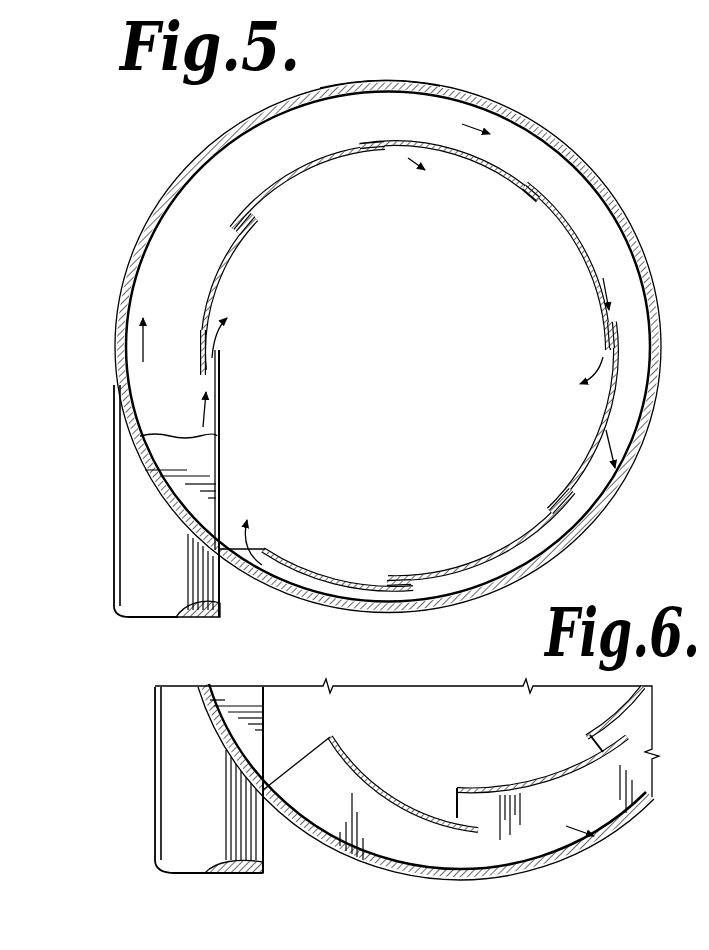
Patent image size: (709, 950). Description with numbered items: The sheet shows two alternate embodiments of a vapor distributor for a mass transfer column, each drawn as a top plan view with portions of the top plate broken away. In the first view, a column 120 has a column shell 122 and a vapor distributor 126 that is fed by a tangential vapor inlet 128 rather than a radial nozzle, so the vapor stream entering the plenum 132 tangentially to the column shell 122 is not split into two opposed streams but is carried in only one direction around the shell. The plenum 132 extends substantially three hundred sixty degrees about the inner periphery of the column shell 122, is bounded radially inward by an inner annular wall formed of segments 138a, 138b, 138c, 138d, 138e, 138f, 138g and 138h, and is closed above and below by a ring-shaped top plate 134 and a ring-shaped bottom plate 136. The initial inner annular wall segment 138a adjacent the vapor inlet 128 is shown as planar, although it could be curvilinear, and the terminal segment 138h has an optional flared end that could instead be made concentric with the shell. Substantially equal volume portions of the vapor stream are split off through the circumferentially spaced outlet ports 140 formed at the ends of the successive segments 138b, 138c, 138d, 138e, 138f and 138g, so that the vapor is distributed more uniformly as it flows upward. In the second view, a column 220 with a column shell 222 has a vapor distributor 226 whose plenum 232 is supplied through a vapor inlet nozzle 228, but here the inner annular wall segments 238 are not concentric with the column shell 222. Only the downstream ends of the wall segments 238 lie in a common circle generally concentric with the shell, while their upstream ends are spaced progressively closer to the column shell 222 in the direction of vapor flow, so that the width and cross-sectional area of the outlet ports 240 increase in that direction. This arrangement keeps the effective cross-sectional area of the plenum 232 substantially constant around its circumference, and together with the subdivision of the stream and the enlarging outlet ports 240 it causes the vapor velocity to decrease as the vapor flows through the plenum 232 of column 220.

In FIG. 5, the column 120 is at (566, 148).
In FIG. 5, the column shell 122 is at (201, 151).
In FIG. 5, the vapor distributor 126 is at (224, 380).
In FIG. 5, the tangential vapor inlet 128 is at (220, 595).
In FIG. 5, the plenum 132 is at (188, 205).
In FIG. 5, the top plate 134 is at (211, 456).
In FIG. 5, the bottom plate 136 is at (359, 84).
In FIG. 5, the initial inner annular wall segment 138a is at (222, 410).
In FIG. 5, the inner annular wall segment 138b is at (229, 270).
In FIG. 5, the inner annular wall segment 138c is at (304, 170).
In FIG. 5, the inner annular wall segment 138d is at (500, 182).
In FIG. 5, the inner annular wall segment 138e is at (586, 262).
In FIG. 5, the inner annular wall segment 138f is at (602, 422).
In FIG. 5, the inner annular wall segment 138g is at (493, 548).
In FIG. 5, the terminal inner annular wall segment 138h is at (300, 571).
In FIG. 5, the outlet ports 140 is at (256, 222).
In FIG. 6, the column 220 is at (383, 682).
In FIG. 6, the column shell 222 is at (518, 878).
In FIG. 6, the vapor distributor 226 is at (268, 700).
In FIG. 6, the vapor inlet nozzle 228 is at (158, 830).
In FIG. 6, the plenum 232 is at (602, 840).
In FIG. 6, the inner annular wall segments 238 is at (612, 710).
In FIG. 6, the outlet ports 240 is at (588, 742).